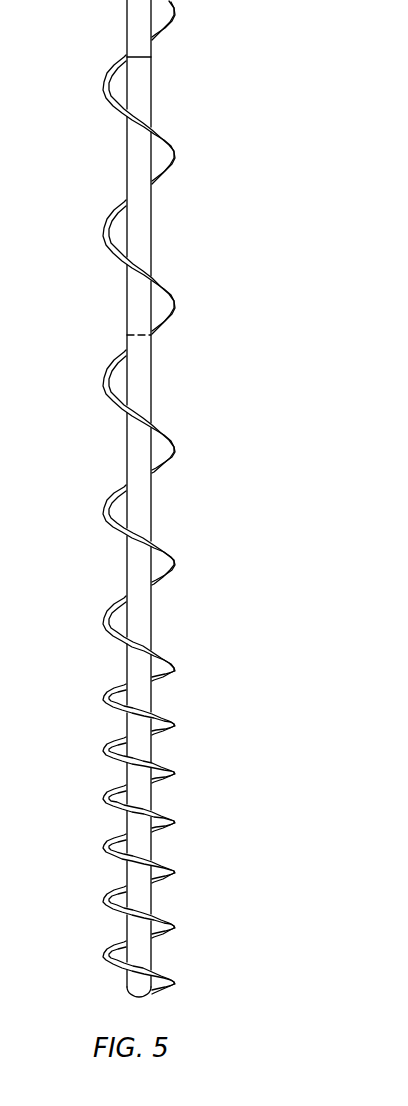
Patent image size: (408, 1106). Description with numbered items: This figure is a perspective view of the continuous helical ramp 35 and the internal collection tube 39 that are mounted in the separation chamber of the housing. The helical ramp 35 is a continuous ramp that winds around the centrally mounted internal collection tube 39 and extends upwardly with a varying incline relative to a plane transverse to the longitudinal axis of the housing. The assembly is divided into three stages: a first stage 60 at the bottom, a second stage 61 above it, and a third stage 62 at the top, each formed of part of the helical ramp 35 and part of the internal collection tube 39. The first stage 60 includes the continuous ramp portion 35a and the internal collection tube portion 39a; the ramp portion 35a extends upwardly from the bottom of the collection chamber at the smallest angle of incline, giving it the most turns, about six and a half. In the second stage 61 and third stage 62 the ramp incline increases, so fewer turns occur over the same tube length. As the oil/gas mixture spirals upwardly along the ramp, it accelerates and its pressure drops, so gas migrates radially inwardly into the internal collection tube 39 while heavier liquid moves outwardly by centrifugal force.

The helical ramp 35 is at (155, 547).
The continuous ramp portion 35a is at (172, 866).
The internal collection tube 39 is at (128, 620).
The internal collection tube portion 39a is at (147, 748).
The first stage 60 is at (143, 839).
The second stage 61 is at (141, 583).
The third stage 62 is at (117, 148).